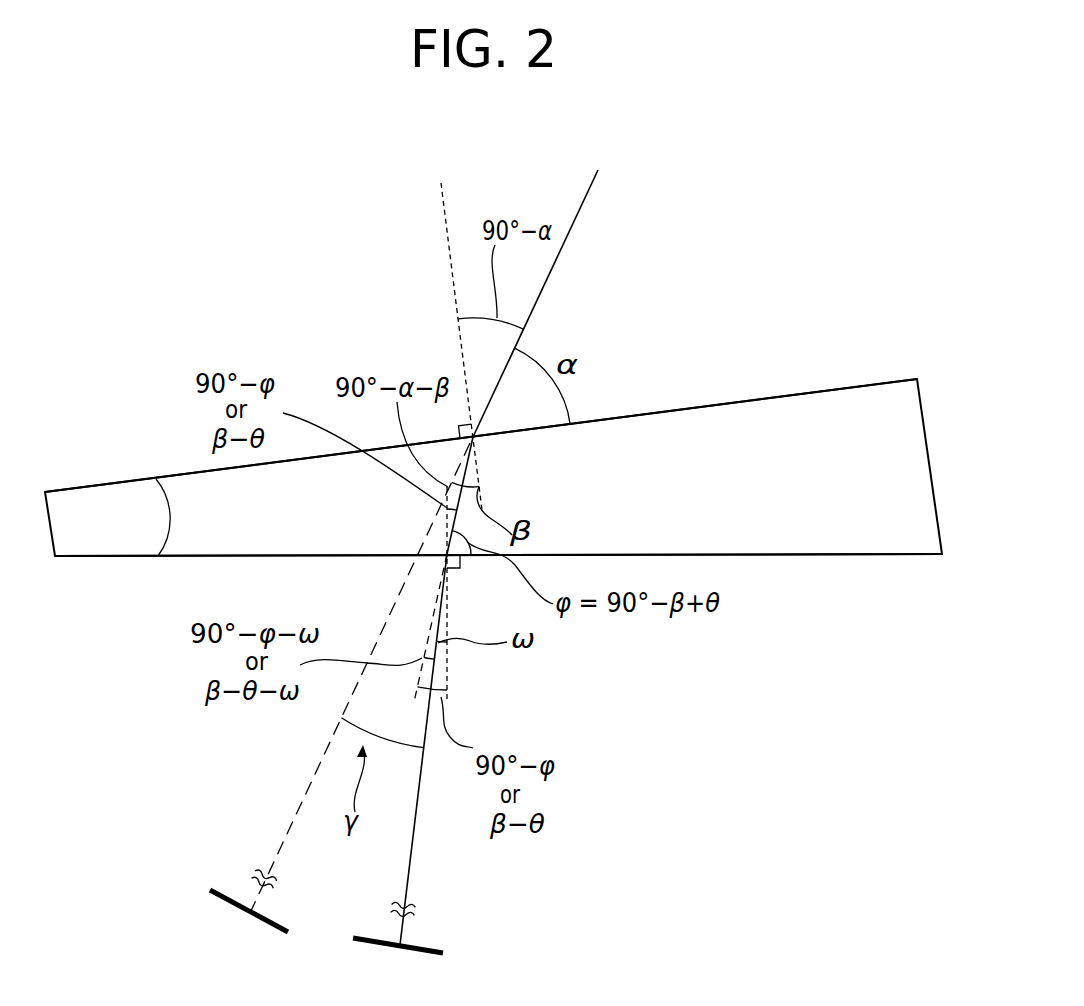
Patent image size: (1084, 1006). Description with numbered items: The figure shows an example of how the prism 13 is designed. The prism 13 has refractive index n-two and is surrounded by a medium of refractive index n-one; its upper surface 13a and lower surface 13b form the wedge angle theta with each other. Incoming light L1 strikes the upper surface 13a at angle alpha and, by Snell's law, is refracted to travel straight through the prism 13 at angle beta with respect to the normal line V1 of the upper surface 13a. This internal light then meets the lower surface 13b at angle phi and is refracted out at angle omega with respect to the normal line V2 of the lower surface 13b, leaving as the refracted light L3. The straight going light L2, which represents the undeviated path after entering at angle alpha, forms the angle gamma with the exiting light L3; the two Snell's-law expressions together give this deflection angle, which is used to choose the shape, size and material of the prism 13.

The prism 13 is at (807, 352).
The upper surface 13a is at (708, 405).
The lower surface 13b is at (788, 555).
The light L1 is at (583, 198).
The straight going light L2 is at (300, 800).
The refracted light L3 is at (413, 850).
The normal line of the upper surface V1 is at (440, 194).
The normal line of the lower surface V2 is at (447, 678).